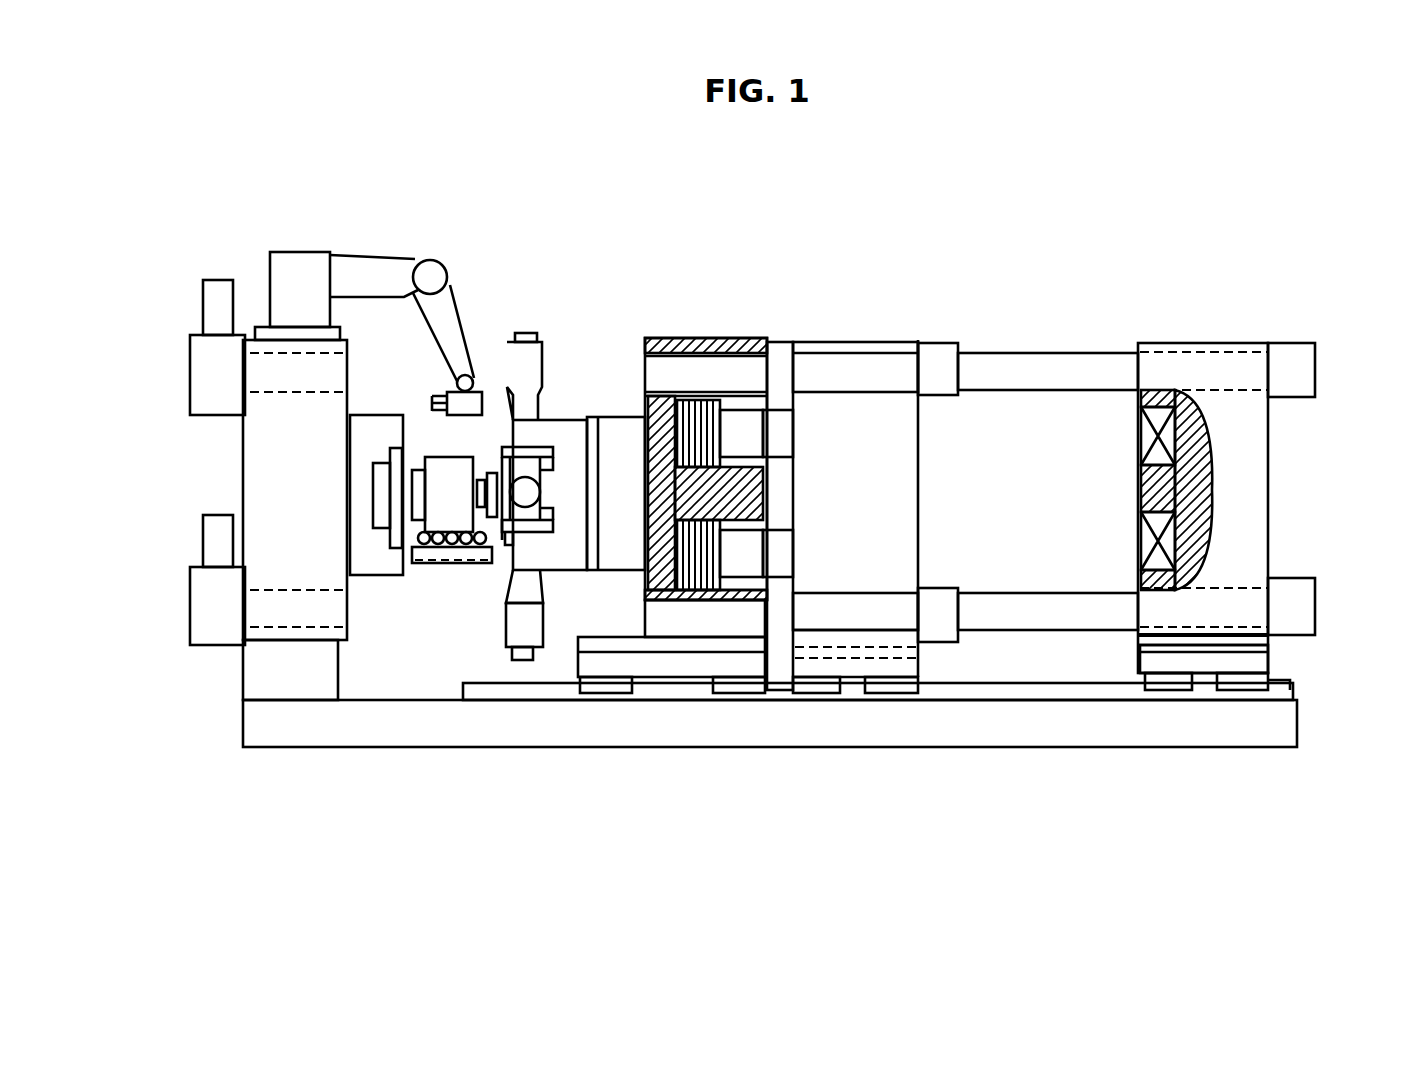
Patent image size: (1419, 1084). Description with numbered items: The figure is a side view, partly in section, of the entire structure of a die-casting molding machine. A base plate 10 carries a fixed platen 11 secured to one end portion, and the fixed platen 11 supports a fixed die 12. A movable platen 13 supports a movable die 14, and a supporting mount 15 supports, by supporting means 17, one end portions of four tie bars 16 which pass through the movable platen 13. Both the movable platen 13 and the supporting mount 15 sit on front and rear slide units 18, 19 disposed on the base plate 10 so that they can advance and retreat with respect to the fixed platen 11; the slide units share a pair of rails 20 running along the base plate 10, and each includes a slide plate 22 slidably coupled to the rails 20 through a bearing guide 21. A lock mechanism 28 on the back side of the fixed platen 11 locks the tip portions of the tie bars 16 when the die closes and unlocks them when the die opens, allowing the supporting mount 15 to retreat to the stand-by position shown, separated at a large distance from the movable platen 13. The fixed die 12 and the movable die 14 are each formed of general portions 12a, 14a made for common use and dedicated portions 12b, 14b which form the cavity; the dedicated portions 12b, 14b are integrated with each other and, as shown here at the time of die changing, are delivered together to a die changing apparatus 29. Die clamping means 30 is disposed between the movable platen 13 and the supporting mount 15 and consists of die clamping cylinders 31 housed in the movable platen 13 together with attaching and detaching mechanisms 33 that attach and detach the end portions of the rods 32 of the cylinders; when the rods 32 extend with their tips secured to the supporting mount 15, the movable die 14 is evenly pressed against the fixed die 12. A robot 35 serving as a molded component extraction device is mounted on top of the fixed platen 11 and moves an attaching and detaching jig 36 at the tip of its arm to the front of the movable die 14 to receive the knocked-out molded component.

The base plate 10 is at (254, 722).
The fixed platen 11 is at (241, 466).
The fixed die 12 is at (270, 828).
The general portion 12a is at (377, 560).
The dedicated portion 12b is at (407, 530).
The movable platen 13 is at (685, 336).
The movable die 14 is at (443, 220).
The general portion 14a is at (567, 433).
The dedicated portion 14b is at (487, 458).
The supporting mount 15 is at (863, 337).
The tie bars 16 is at (1037, 612).
The supporting means 17 is at (1295, 369).
The front slide unit 18 is at (677, 695).
The rear slide unit 19 is at (1196, 696).
The rails 20 is at (990, 690).
The bearing guide 21 is at (733, 686).
The slide plate 22 is at (660, 665).
The lock mechanism 28 is at (204, 378).
The die changing apparatus 29 is at (460, 553).
The die clamping means 30 is at (776, 408).
The die clamping cylinders 31 is at (746, 395).
The rods 32 is at (792, 565).
The attaching and detaching mechanisms 33 is at (1137, 537).
The robot 35 is at (291, 250).
The attaching and detaching jig 36 is at (452, 396).